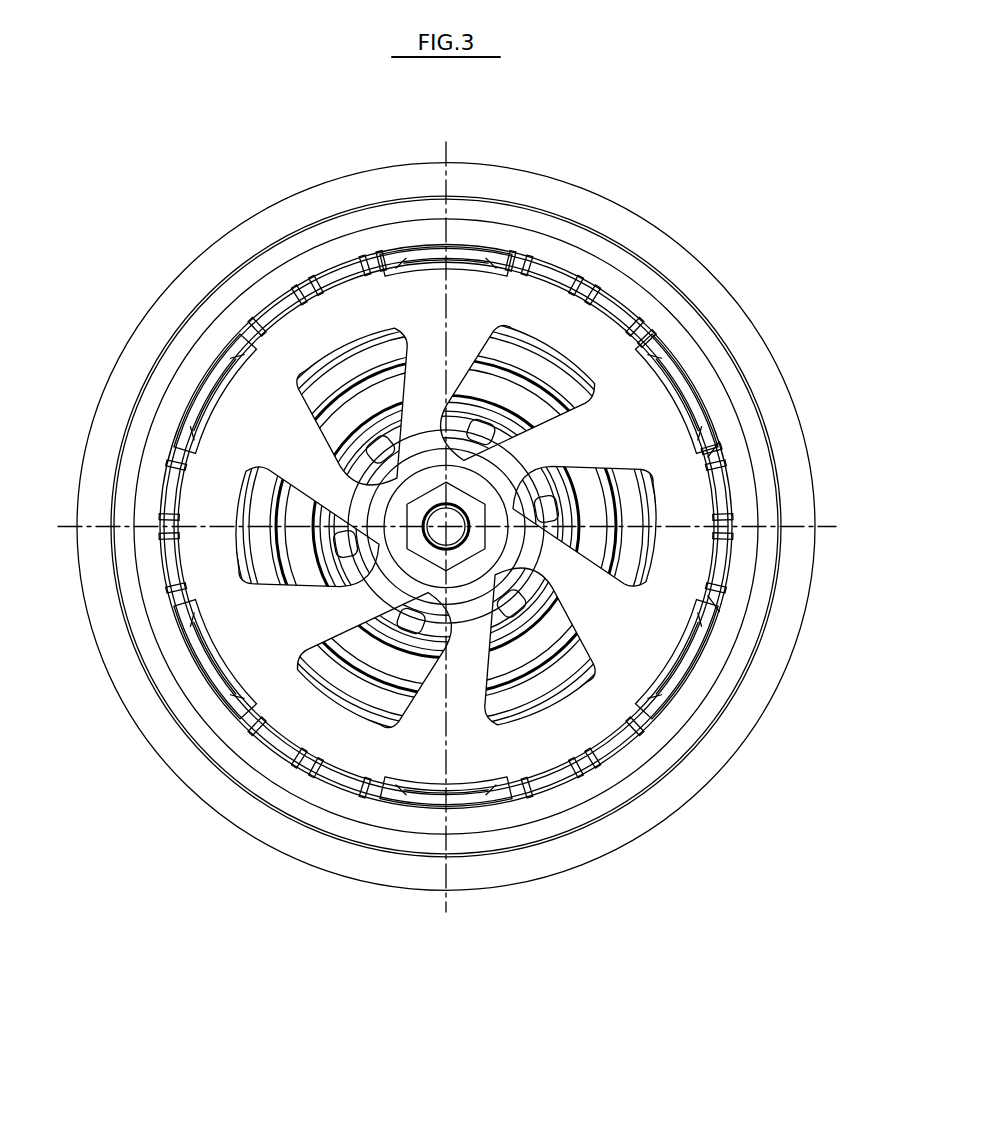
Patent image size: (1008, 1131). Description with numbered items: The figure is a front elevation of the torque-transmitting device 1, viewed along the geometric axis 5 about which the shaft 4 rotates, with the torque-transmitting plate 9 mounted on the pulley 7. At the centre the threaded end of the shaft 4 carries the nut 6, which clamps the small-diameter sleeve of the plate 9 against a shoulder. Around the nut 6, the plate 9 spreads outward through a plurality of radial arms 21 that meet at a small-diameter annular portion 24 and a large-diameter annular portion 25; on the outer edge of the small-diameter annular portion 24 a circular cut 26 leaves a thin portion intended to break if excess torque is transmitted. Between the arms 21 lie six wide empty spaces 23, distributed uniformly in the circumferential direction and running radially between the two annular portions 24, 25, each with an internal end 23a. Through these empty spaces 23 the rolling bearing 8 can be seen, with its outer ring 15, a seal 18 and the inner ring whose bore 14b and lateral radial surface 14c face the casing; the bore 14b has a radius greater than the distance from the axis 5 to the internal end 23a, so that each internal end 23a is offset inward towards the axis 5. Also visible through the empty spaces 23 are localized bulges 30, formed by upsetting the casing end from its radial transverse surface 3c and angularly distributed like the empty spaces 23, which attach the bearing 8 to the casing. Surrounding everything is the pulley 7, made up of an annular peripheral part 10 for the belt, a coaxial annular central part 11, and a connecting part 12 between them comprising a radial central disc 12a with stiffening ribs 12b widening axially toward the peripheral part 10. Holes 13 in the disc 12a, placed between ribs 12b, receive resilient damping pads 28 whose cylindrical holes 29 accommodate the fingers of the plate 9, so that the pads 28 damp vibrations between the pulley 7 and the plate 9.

The torque-transmitting device 1 is at (226, 860).
The radial transverse surface 3c is at (700, 385).
The shaft 4 is at (457, 513).
The geometric axis 5 is at (445, 515).
The nut 6 is at (417, 513).
The pulley 7 is at (178, 785).
The rolling bearing 8 is at (360, 410).
The torque-transmitting plate 9 is at (340, 777).
The annular peripheral part 10 is at (147, 341).
The annular central part 11 is at (317, 387).
The connecting part 12 is at (722, 478).
The radial central disc 12a is at (613, 297).
The stiffening ribs 12b is at (305, 292).
The holes 13 is at (505, 238).
The bore 14b is at (573, 387).
The lateral radial surface 14c is at (510, 410).
The outer ring 15 is at (490, 360).
The seal 18 is at (330, 383).
The radial arms 21 is at (427, 703).
The empty spaces 23 is at (522, 688).
The internal end 23a is at (512, 550).
The small-diameter annular portion 24 is at (672, 670).
The large-diameter annular portion 25 is at (597, 723).
The cut 26 is at (385, 586).
The damping pads 28 is at (468, 800).
The holes 29 is at (682, 660).
The localized bulges 30 is at (725, 415).